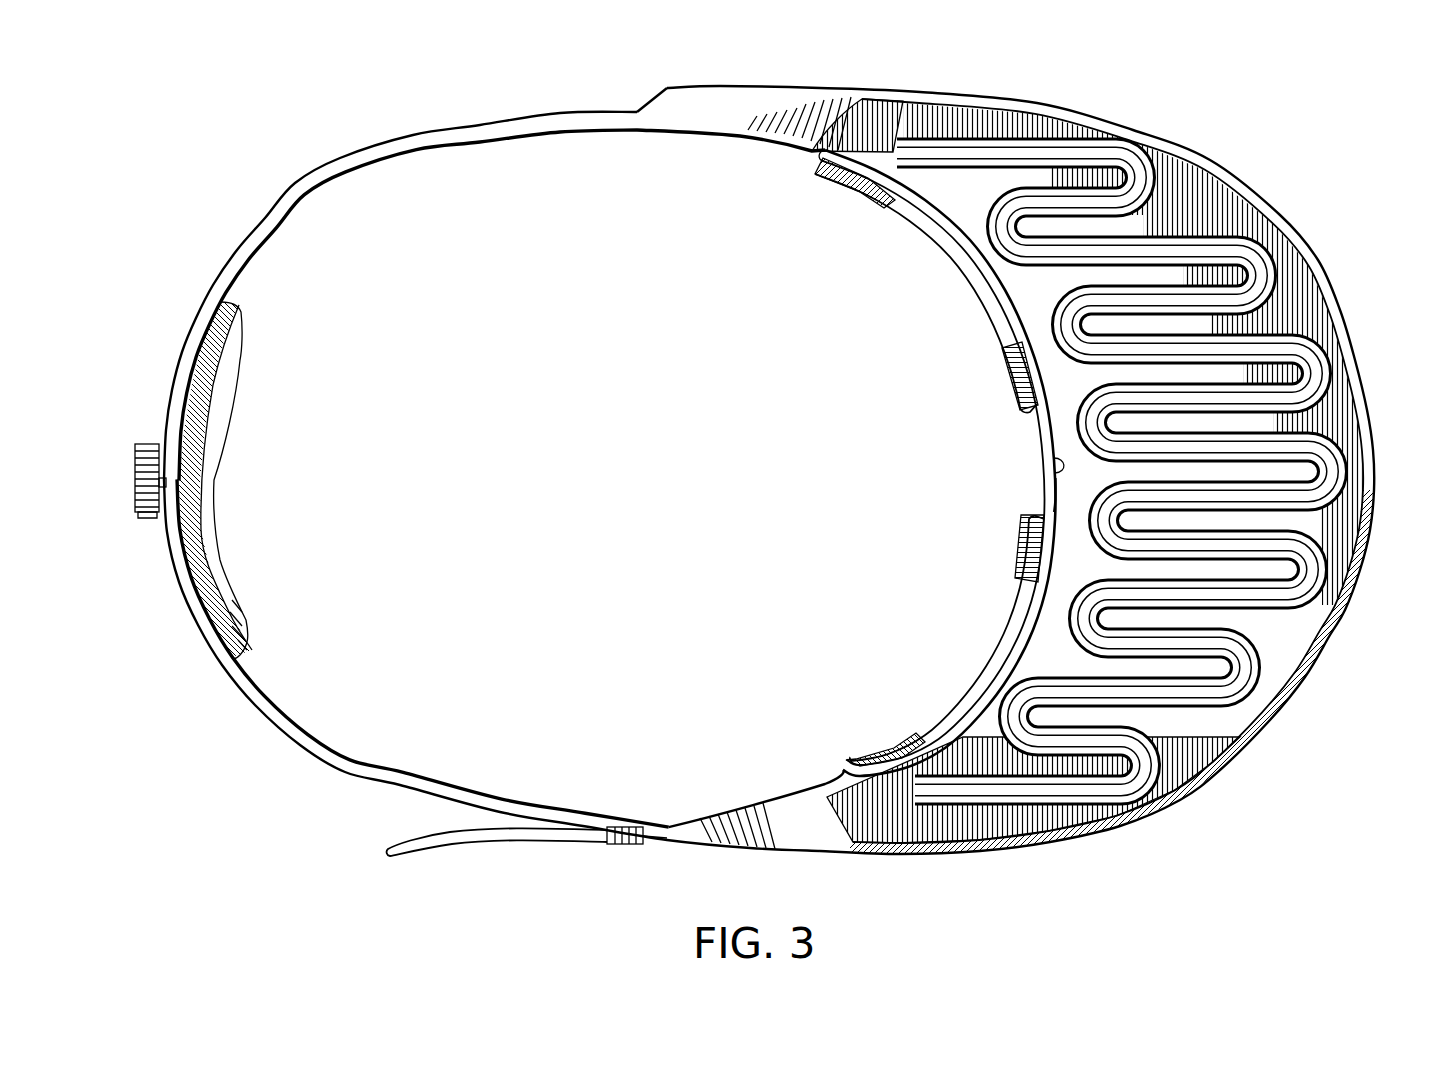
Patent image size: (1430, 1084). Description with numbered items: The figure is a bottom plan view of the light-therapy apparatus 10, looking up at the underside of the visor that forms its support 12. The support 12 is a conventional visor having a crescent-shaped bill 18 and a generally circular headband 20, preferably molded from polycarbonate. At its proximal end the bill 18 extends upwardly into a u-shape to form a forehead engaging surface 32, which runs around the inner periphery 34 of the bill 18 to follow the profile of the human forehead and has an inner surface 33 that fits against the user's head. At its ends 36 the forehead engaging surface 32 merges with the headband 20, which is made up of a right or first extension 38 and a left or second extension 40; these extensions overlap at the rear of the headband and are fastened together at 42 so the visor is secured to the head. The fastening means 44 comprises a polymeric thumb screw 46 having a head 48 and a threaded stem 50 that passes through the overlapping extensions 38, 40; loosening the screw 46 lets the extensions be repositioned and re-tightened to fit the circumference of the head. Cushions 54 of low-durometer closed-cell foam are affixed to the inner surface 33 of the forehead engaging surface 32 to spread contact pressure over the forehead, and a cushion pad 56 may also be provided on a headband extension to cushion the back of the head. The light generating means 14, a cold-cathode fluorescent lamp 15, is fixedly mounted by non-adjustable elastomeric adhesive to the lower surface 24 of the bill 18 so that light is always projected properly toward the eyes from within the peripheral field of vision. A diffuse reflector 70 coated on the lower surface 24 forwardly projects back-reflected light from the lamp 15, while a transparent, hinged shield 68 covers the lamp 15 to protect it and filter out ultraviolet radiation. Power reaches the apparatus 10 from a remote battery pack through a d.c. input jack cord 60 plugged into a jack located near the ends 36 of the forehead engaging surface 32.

The apparatus 10 is at (310, 141).
The support 12 is at (742, 125).
The light generating means 14 is at (1077, 432).
The cold-cathode fluorescent lamp 15 is at (1340, 466).
The bill 18 is at (1225, 176).
The headband 20 is at (432, 148).
The lower surface 24 is at (1325, 305).
The forehead engaging surface 32 is at (977, 258).
The inner surface 33 is at (1045, 490).
The inner periphery 34 is at (1052, 466).
The ends 36 is at (655, 133).
The first extension 38 is at (320, 757).
The second extension 40 is at (540, 128).
The fastening location 42 is at (182, 463).
The fastening means 44 is at (126, 489).
The thumb screw 46 is at (143, 514).
The head 48 is at (146, 458).
The threaded stem 50 is at (163, 490).
The cushions 54 is at (1006, 383).
The cushion pad 56 is at (250, 592).
The d.c. input jack cord 60 is at (530, 840).
The shield 68 is at (1295, 637).
The diffuse reflector 70 is at (1082, 566).